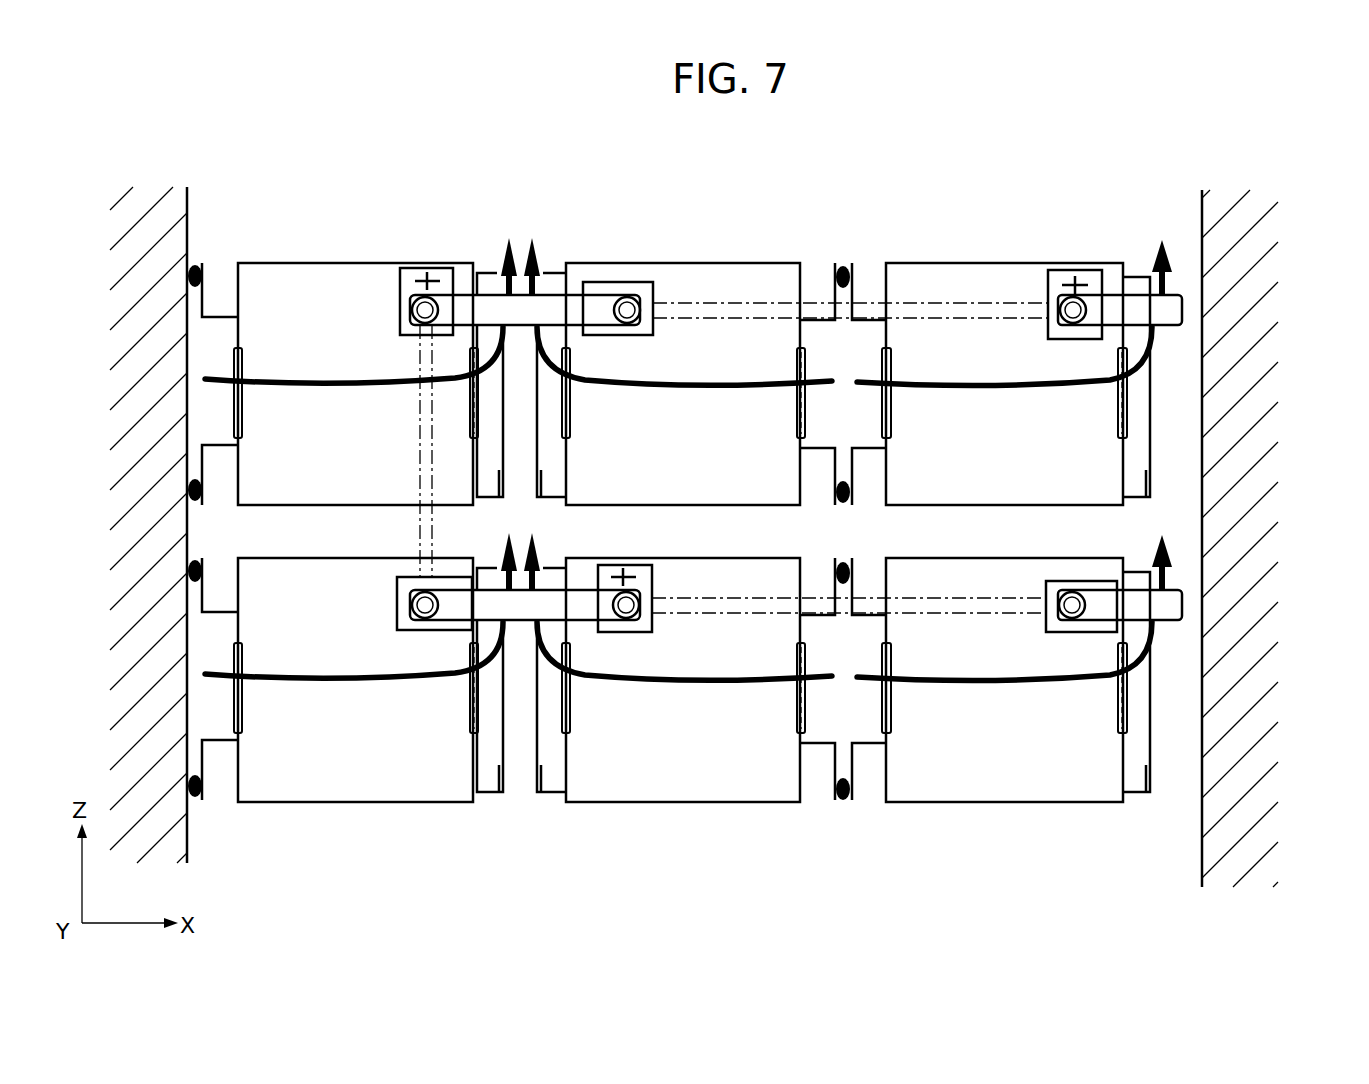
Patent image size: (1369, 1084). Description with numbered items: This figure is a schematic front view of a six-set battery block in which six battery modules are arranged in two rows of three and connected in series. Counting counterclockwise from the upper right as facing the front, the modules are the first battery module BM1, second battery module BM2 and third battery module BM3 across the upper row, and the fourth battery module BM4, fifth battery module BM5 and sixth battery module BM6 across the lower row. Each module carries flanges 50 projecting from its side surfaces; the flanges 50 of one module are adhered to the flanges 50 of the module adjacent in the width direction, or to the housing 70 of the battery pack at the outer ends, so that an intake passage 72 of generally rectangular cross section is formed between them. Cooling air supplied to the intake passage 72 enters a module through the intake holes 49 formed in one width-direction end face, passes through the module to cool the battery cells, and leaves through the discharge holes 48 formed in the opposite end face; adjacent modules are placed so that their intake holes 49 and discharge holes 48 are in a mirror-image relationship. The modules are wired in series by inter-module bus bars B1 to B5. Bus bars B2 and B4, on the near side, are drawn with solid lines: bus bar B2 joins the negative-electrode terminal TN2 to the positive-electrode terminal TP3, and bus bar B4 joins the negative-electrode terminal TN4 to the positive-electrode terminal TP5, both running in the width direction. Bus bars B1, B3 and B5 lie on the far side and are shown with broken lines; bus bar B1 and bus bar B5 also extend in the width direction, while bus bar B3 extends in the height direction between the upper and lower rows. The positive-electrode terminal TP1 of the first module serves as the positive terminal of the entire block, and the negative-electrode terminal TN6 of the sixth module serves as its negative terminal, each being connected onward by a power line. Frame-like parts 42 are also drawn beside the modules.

The housing 70 is at (189, 208).
The intake passage 72 is at (228, 421).
The flange 50 is at (818, 320).
The intake hole 49 is at (886, 372).
The discharge hole 48 is at (1127, 402).
The bracket frame 42 is at (1150, 440).
The first battery module BM1 is at (1034, 429).
The second battery module BM2 is at (712, 429).
The third battery module BM3 is at (386, 429).
The fourth battery module BM4 is at (386, 727).
The fifth battery module BM5 is at (712, 727).
The sixth battery module BM6 is at (1034, 727).
The positive-electrode terminal TP1 is at (1058, 272).
The positive-electrode terminal TP3 is at (408, 270).
The positive-electrode terminal TP5 is at (638, 578).
The negative-electrode terminal TN2 is at (598, 284).
The negative-electrode terminal TN4 is at (454, 585).
The negative-electrode terminal TN6 is at (1098, 584).
The inter-module bus bar B1 is at (745, 300).
The inter-module bus bar B2 is at (547, 300).
The inter-module bus bar B3 is at (420, 347).
The inter-module bus bar B4 is at (553, 600).
The inter-module bus bar B5 is at (932, 600).